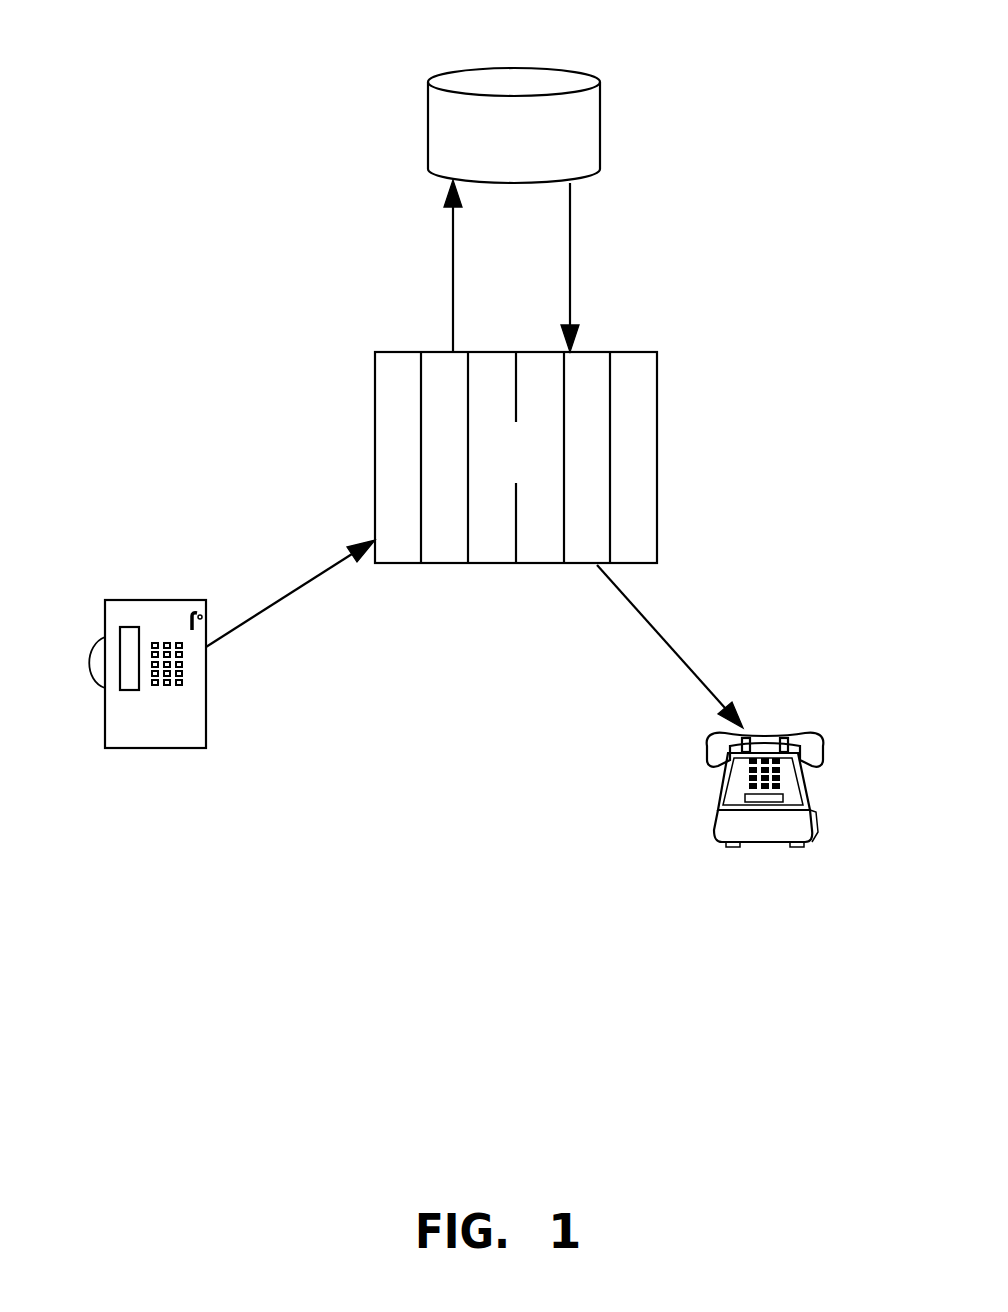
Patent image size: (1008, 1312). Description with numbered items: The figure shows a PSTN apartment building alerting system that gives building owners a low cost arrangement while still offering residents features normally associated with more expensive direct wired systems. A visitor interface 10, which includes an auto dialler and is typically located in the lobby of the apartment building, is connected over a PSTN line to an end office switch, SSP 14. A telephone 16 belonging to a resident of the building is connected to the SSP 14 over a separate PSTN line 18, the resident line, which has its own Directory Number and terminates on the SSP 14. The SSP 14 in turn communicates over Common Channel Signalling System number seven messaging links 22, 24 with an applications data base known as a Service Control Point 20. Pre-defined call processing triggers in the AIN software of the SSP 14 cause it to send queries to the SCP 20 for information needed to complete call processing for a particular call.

The visitor interface 10 is at (206, 670).
The SSP 14 is at (657, 392).
The telephone 16 is at (823, 750).
The PSTN line 18 is at (640, 613).
The Service Control Point 20 is at (453, 69).
The CCS7 messaging link 22 is at (453, 248).
The CCS7 messaging link 24 is at (570, 248).